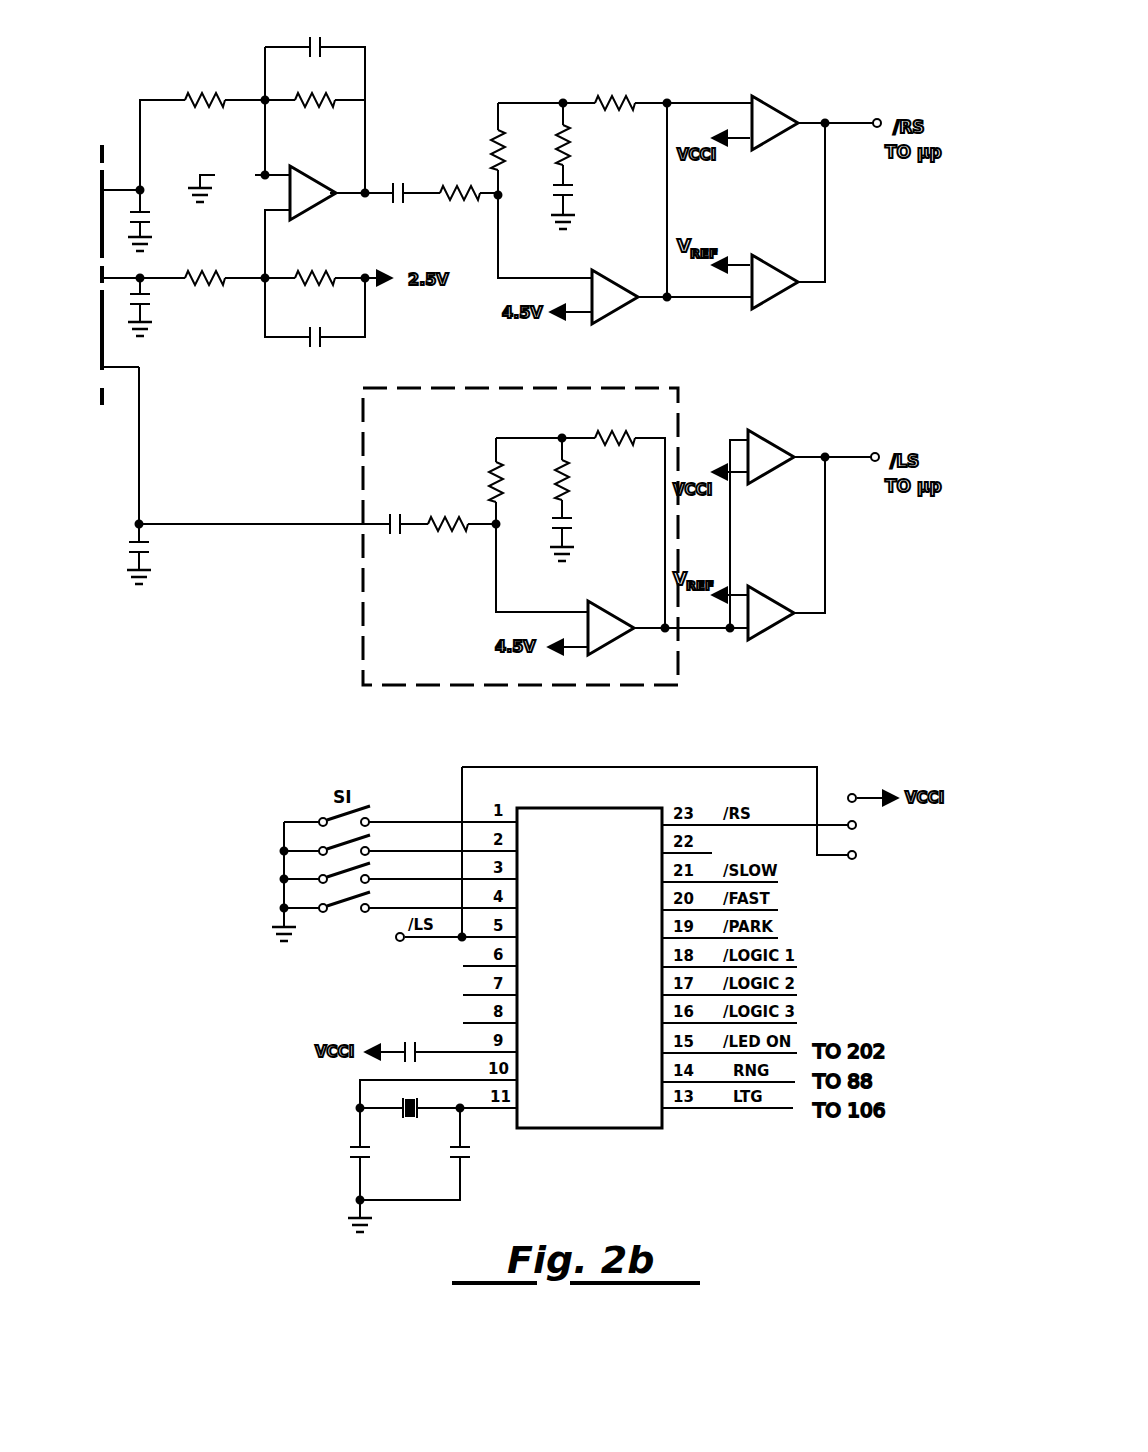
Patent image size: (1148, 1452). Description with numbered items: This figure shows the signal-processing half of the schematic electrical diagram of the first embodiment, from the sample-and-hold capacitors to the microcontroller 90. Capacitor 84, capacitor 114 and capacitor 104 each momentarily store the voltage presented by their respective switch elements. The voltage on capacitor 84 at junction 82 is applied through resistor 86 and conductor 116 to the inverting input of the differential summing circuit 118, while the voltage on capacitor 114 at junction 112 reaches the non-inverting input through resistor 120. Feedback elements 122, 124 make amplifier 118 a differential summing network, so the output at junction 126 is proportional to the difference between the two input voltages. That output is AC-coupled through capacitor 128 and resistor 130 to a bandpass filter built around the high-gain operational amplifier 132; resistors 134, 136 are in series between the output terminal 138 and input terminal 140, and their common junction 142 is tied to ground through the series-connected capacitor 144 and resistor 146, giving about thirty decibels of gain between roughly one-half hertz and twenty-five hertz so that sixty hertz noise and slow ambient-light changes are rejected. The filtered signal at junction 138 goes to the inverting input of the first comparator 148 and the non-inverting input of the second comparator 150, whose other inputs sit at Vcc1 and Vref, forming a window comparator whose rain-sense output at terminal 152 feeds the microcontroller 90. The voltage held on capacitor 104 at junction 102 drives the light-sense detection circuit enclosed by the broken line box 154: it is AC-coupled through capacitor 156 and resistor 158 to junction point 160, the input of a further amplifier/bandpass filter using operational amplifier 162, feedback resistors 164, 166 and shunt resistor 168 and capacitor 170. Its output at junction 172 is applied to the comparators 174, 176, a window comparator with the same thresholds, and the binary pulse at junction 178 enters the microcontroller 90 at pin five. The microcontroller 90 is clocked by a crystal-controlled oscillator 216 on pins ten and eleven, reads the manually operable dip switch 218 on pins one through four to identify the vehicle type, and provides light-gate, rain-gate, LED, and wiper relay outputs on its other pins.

The input junction 82 is at (142, 188).
The capacitor 84 is at (150, 216).
The resistor 86 is at (200, 96).
The microcontroller 90 is at (583, 808).
The junction 102 is at (141, 520).
The capacitor 104 is at (150, 548).
The junction 112 is at (148, 283).
The capacitor 114 is at (155, 310).
The conductor 116 is at (266, 128).
The differential summing circuit 118 is at (305, 175).
The resistor 120 is at (205, 270).
The feedback element 122 is at (305, 96).
The feedback element 124 is at (317, 38).
The junction 126 is at (365, 200).
The capacitor 128 is at (398, 183).
The resistor 130 is at (462, 205).
The high-gain operational amplifier 132 is at (611, 275).
The resistor 134 is at (615, 96).
The resistor 136 is at (503, 150).
The output terminal 138 is at (668, 300).
The input terminal 140 is at (500, 197).
The common junction 142 is at (563, 100).
The capacitor 144 is at (575, 192).
The resistor 146 is at (568, 160).
The first comparator 148 is at (770, 98).
The second comparator 150 is at (757, 255).
The terminal 152 is at (877, 118).
The broken line box 154 is at (363, 425).
The capacitor 156 is at (395, 512).
The resistor 158 is at (447, 535).
The junction point 160 is at (500, 527).
The operational amplifier 162 is at (608, 607).
The feedback resistor 164 is at (613, 432).
The feedback resistor 166 is at (503, 485).
The resistor 168 is at (572, 486).
The capacitor 170 is at (573, 527).
The junction 172 is at (667, 632).
The comparator 174 is at (762, 432).
The comparator 176 is at (758, 590).
The junction 178 is at (875, 452).
The crystal-controlled oscillator 216 is at (427, 1183).
The dip switch 218 is at (323, 802).